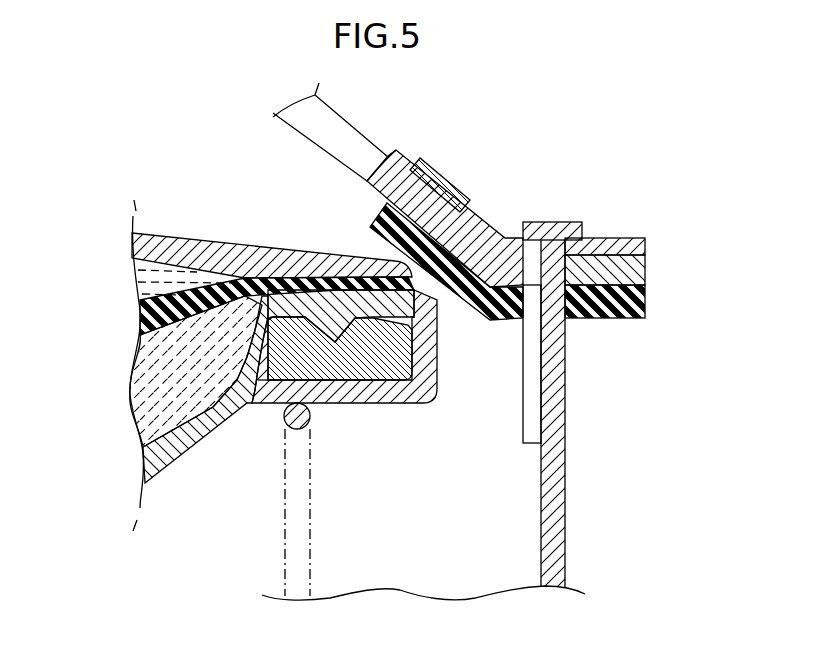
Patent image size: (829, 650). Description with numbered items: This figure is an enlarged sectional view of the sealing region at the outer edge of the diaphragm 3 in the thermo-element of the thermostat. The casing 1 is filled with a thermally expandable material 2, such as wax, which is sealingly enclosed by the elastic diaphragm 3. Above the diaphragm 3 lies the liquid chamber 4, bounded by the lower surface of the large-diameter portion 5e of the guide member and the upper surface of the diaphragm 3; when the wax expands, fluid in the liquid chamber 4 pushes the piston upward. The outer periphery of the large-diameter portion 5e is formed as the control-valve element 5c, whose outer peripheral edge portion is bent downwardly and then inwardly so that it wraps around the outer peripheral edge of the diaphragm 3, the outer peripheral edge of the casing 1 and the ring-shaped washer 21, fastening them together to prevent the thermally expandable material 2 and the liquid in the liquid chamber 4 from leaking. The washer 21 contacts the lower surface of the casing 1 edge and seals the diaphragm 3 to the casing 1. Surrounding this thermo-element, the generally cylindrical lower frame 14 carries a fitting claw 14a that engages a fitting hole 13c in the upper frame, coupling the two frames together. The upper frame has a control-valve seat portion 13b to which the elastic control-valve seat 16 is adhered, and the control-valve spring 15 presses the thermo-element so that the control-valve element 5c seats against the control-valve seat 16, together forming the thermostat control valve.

The casing 1 is at (180, 450).
The thermally expandable material 2 is at (153, 403).
The diaphragm 3 is at (143, 318).
The liquid chamber 4 is at (147, 288).
The control-valve element 5c is at (438, 272).
The large-diameter portion 5e is at (190, 233).
The control-valve seat portion 13b is at (478, 248).
The fitting hole 13c is at (562, 262).
The lower frame 14 is at (563, 562).
The fitting claw 14a is at (560, 247).
The control-valve spring 15 is at (310, 545).
The control-valve seat 16 is at (435, 195).
The washer 21 is at (370, 355).